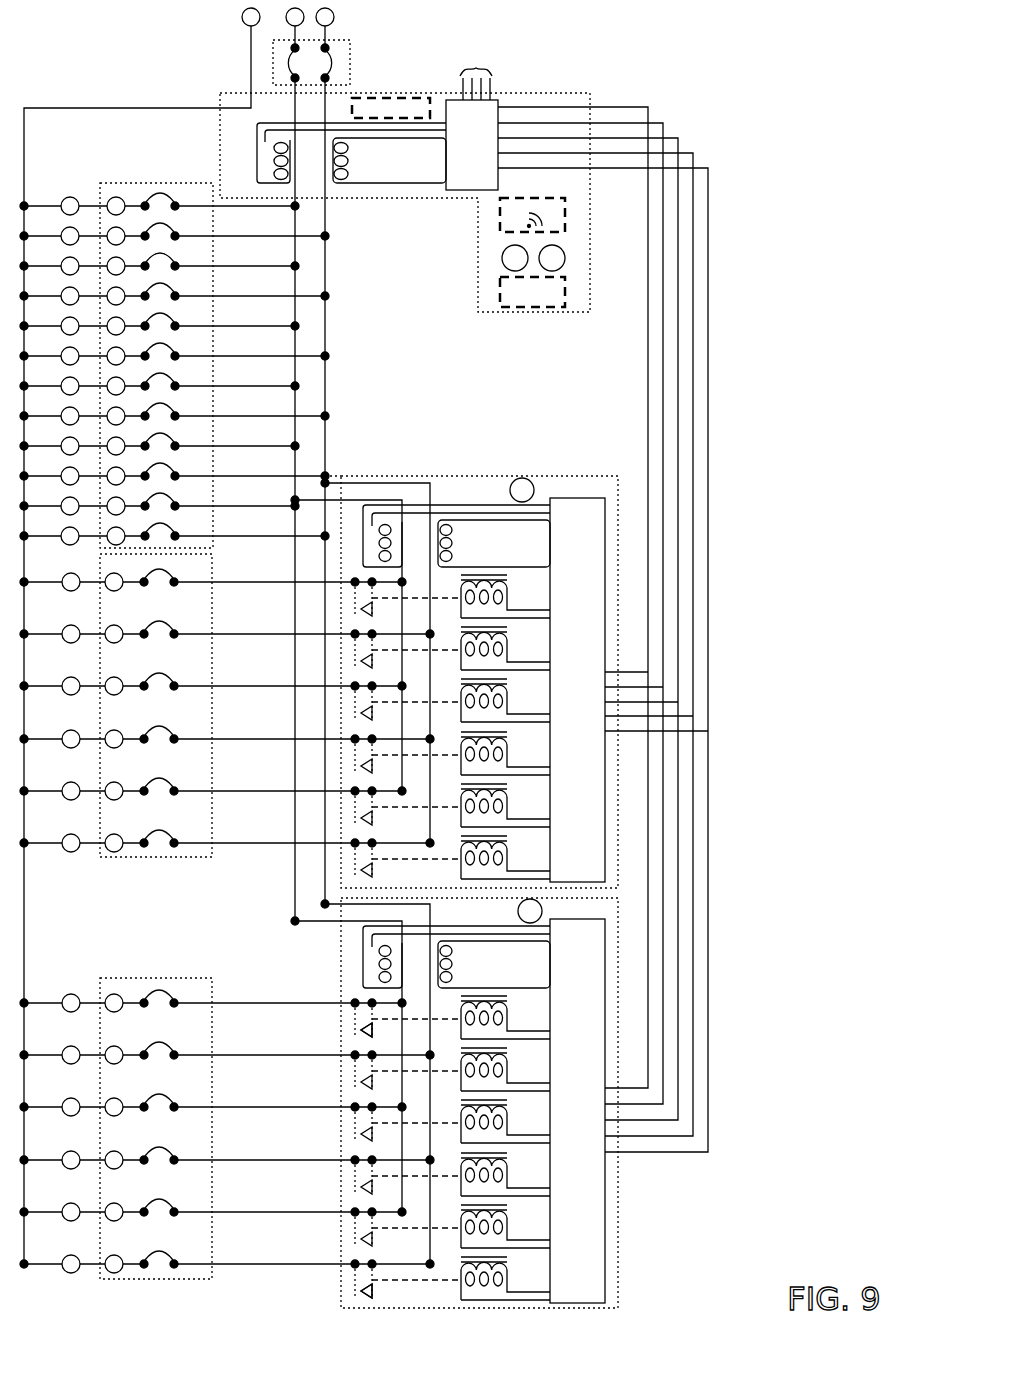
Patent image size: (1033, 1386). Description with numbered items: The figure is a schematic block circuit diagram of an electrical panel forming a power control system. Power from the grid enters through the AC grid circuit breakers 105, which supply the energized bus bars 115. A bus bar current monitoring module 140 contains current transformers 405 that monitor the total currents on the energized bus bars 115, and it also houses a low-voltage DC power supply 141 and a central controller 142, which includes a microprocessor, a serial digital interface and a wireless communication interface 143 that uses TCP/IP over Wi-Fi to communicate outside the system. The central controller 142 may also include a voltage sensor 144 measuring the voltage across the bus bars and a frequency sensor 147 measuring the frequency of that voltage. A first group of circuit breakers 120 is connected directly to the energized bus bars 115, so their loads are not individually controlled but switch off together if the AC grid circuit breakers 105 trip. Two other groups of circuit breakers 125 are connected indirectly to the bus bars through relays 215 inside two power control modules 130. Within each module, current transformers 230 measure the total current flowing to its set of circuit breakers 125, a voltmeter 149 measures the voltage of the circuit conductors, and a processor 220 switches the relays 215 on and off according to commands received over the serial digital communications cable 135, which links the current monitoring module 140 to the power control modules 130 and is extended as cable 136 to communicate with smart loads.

The AC grid circuit breakers 105 is at (352, 48).
The energized bus bars 115 is at (328, 312).
The circuit breakers 120 is at (100, 185).
The circuit breakers 125 is at (125, 858).
The power control modules 130 is at (462, 864).
The serial digital communications cable 135 is at (675, 122).
The cable 136 is at (474, 117).
The bus bar current monitoring module 140 is at (522, 93).
The low-voltage DC power supply 141 is at (566, 302).
The central controller 142 is at (405, 98).
The wireless communication interface 143 is at (567, 200).
The voltage sensor 144 is at (502, 258).
The frequency sensor 147 is at (565, 259).
The voltmeter 149 is at (525, 478).
The relays 215 is at (355, 1030).
The processors 220 is at (568, 508).
The current transformers 230 is at (363, 968).
The current transformers 405 is at (257, 155).